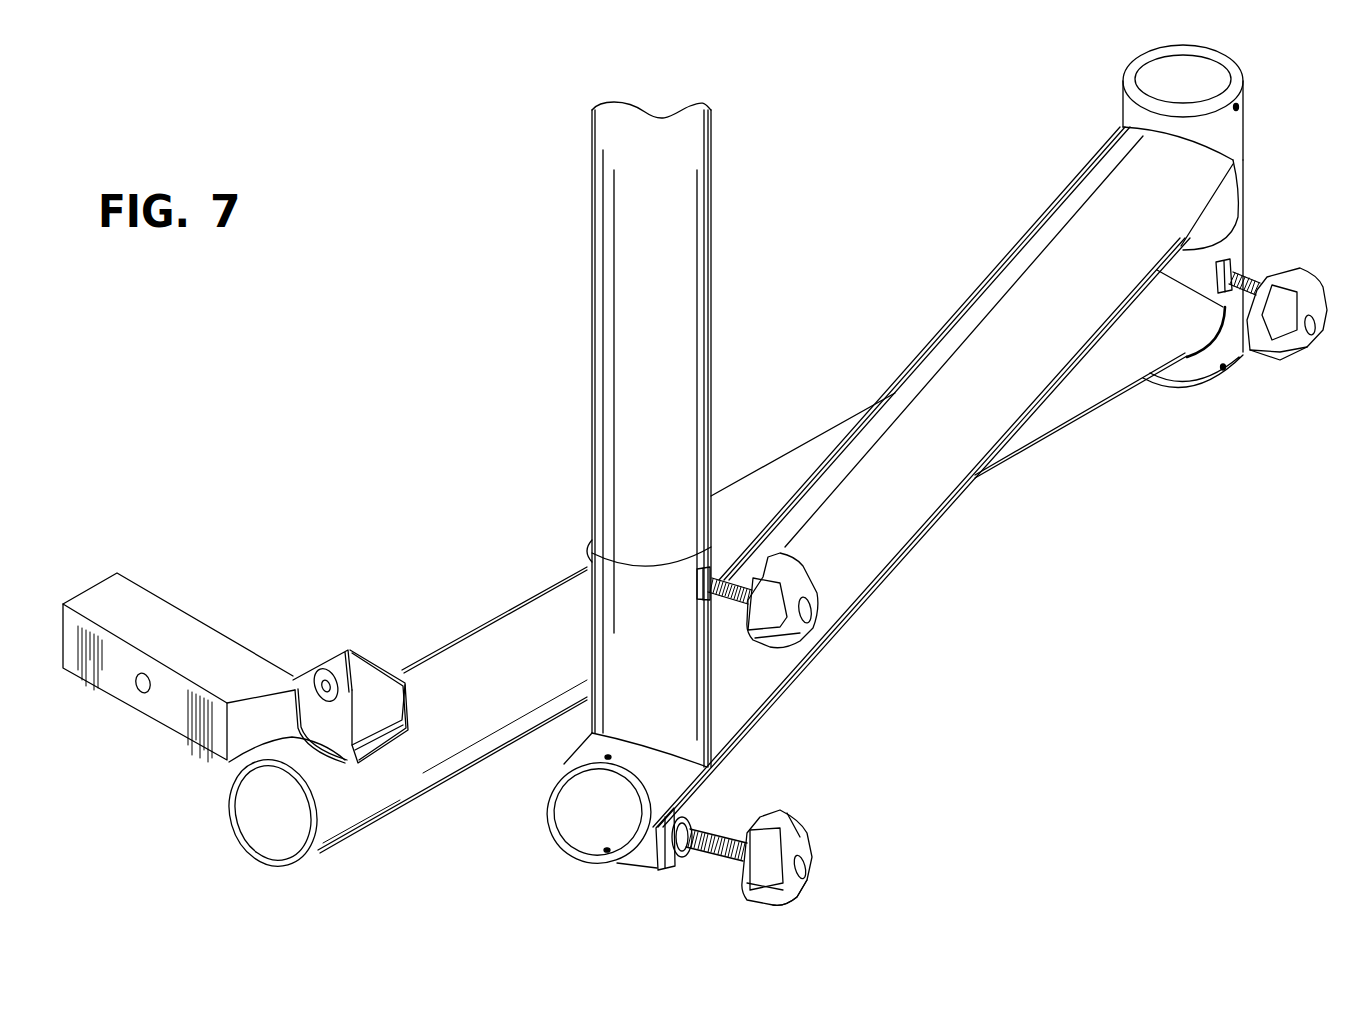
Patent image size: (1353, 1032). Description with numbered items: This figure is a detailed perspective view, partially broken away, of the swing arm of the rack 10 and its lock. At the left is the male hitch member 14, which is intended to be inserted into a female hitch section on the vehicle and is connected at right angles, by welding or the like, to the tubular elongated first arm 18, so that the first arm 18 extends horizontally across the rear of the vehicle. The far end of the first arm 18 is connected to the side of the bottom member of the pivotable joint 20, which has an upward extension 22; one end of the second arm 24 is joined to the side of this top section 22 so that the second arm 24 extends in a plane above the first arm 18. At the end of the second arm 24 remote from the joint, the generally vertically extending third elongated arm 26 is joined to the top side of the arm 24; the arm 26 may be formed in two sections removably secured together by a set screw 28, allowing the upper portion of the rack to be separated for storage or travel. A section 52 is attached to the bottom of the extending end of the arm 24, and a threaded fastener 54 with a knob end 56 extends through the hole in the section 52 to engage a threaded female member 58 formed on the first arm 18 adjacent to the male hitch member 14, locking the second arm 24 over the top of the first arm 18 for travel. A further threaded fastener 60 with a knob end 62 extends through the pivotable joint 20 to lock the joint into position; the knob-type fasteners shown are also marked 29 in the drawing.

The rack 10 is at (822, 670).
The male hitch member 14 is at (165, 601).
The first arm 18 is at (472, 630).
The pivotable joint 20 is at (1243, 243).
The upward extension 22 is at (1235, 125).
The second arm 24 is at (1000, 272).
The third elongated arm 26 is at (712, 308).
The set screw 28 is at (720, 573).
The knob 29 is at (777, 813).
The section 52 is at (655, 870).
The threaded fastener 54 is at (713, 837).
The knob end 56 is at (793, 893).
The threaded female member 58 is at (332, 656).
The threaded fastener 60 is at (1253, 270).
The knob end 62 is at (1298, 277).